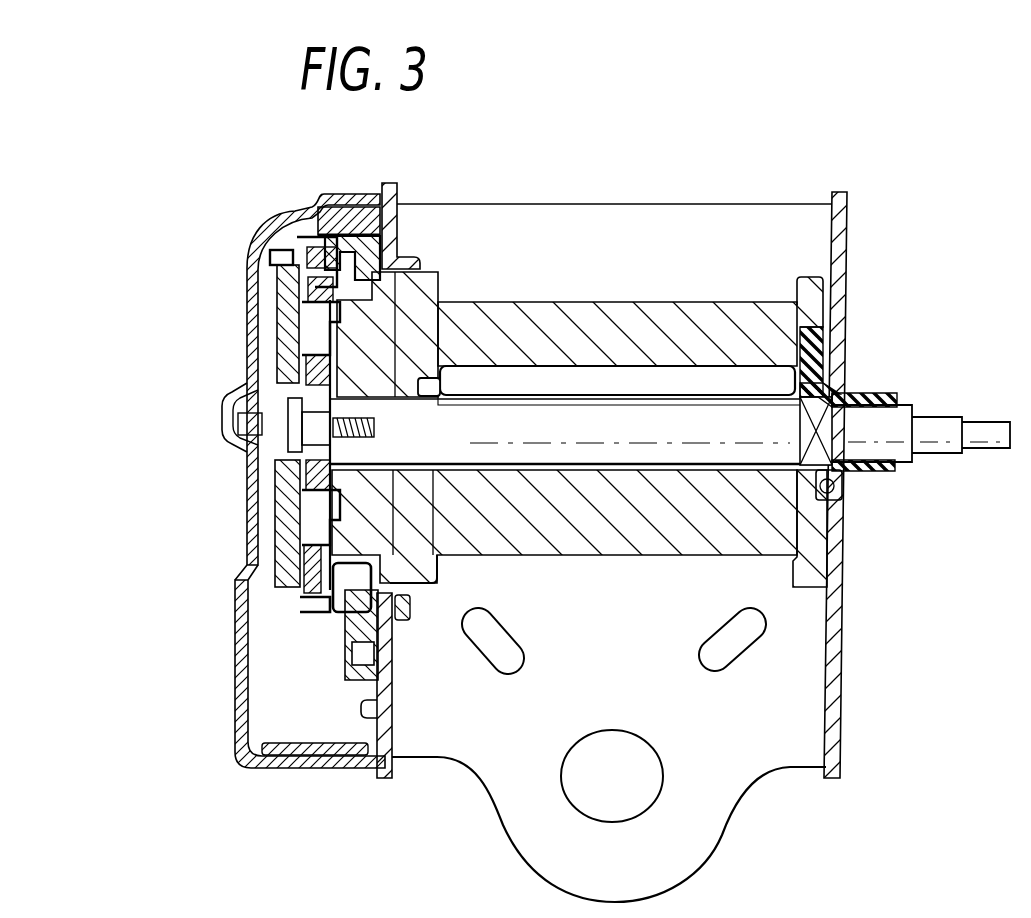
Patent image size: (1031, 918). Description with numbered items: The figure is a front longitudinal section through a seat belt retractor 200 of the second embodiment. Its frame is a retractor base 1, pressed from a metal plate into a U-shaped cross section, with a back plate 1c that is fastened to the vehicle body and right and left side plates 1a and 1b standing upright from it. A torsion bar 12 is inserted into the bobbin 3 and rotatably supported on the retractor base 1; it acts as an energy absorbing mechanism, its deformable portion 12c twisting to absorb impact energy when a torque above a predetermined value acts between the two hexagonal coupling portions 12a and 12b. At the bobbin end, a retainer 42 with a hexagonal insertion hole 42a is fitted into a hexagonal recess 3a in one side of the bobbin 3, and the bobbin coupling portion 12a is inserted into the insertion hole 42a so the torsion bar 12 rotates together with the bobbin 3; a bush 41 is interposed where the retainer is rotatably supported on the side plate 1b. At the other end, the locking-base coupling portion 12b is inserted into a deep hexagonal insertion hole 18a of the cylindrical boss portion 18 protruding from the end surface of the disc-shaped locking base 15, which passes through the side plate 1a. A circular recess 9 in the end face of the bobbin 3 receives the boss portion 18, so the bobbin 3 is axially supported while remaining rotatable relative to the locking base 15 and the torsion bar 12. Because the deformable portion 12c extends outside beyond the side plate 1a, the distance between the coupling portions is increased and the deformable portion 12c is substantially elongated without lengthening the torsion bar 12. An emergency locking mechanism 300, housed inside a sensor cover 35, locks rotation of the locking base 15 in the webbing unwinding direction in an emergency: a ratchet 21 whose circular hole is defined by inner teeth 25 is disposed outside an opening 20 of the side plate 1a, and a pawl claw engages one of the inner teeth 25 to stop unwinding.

The retractor base 1 is at (631, 203).
The side plate 1a is at (392, 729).
The side plate 1b is at (842, 726).
The back plate 1c is at (702, 826).
The bobbin 3 is at (577, 560).
The recess 3a is at (836, 532).
The recess 9 is at (457, 444).
The torsion bar 12 is at (655, 474).
The bobbin coupling portion 12a is at (806, 432).
The locking-base coupling portion 12b is at (372, 378).
The deformable portion 12c is at (630, 412).
The locking base 15 is at (343, 340).
The boss portion 18 is at (427, 368).
The insertion hole 18a is at (428, 412).
The opening 20 is at (426, 592).
The ratchet 21 is at (345, 245).
The inner teeth 25 is at (346, 592).
The sensor cover 35 is at (237, 604).
The bush 41 is at (840, 488).
The retainer 42 is at (872, 392).
The insertion hole 42a is at (822, 420).
The seat belt retractor 200 is at (516, 203).
The emergency locking mechanism 300 is at (243, 237).